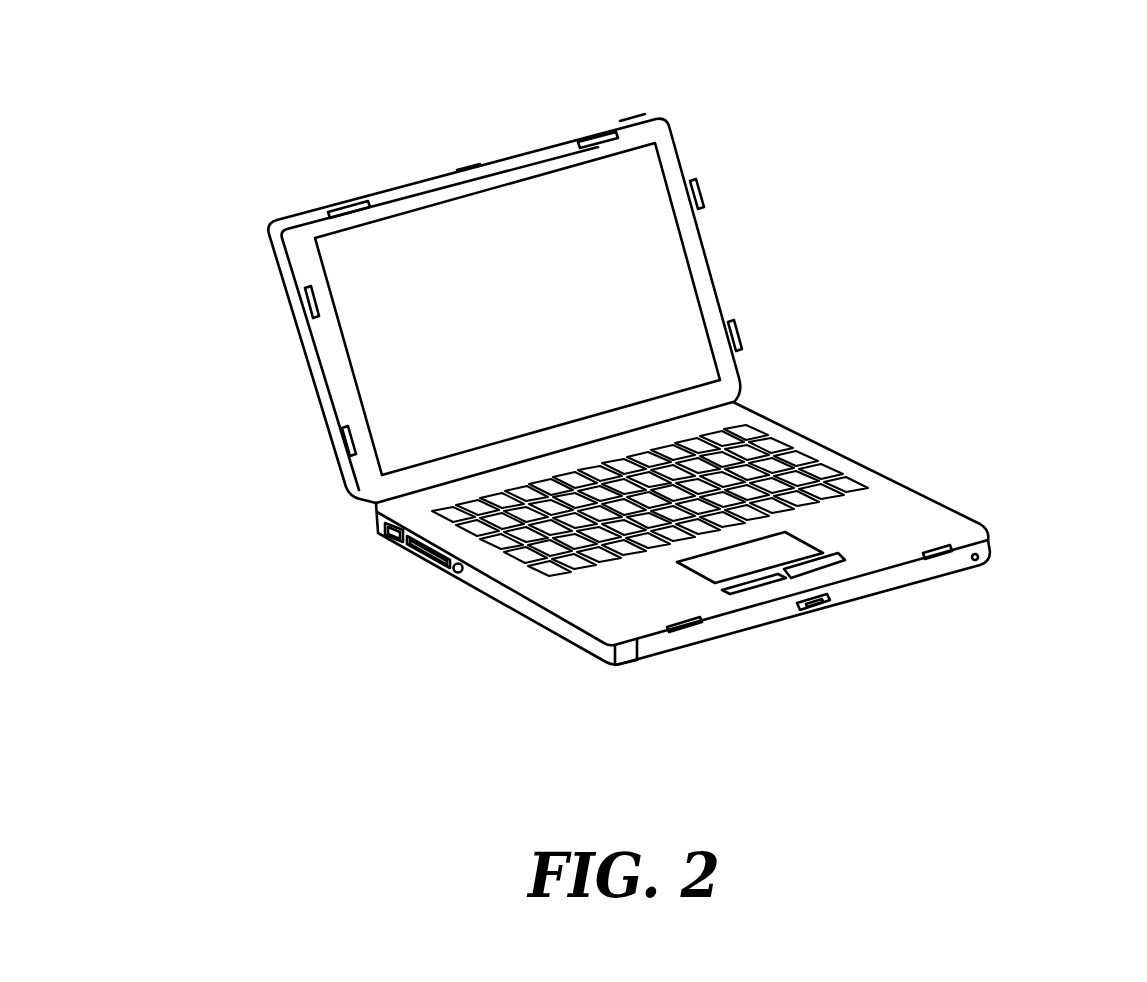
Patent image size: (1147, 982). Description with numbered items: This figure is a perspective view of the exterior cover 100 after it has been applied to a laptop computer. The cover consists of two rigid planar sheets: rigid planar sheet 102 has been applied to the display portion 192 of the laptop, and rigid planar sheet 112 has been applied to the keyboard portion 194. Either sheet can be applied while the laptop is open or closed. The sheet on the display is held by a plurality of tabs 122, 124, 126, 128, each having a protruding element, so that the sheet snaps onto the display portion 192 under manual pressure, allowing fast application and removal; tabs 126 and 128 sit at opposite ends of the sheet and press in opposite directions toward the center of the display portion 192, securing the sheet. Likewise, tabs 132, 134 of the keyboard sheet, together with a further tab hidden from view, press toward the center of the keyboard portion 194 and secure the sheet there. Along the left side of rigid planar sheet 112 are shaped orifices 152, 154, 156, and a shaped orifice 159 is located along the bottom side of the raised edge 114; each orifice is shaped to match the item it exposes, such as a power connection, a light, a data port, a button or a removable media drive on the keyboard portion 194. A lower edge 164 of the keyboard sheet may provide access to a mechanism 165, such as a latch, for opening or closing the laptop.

The exterior cover 100 is at (247, 197).
The rigid planar sheet 102 is at (667, 120).
The rigid planar sheet 112 is at (993, 550).
The raised edge 114 is at (572, 634).
The tab 122 is at (345, 210).
The tab 124 is at (600, 128).
The tab 126 is at (346, 444).
The tab 128 is at (739, 334).
The tab 132 is at (682, 626).
The tab 134 is at (945, 540).
The shaped orifice 152 is at (392, 546).
The shaped orifice 154 is at (426, 556).
The shaped orifice 156 is at (457, 575).
The shaped orifice 159 is at (980, 560).
The lower edge 164 is at (812, 612).
The mechanism 165 is at (818, 607).
The display portion 192 is at (703, 268).
The keyboard portion 194 is at (868, 485).